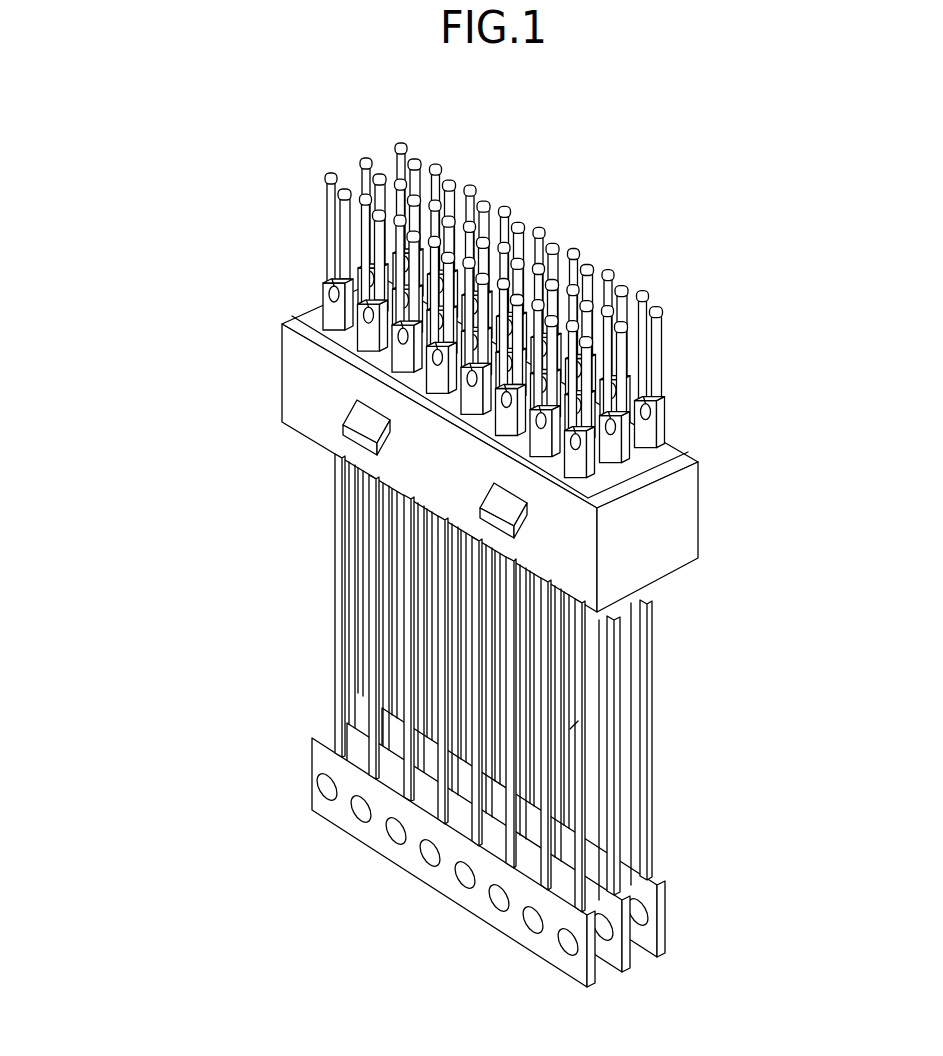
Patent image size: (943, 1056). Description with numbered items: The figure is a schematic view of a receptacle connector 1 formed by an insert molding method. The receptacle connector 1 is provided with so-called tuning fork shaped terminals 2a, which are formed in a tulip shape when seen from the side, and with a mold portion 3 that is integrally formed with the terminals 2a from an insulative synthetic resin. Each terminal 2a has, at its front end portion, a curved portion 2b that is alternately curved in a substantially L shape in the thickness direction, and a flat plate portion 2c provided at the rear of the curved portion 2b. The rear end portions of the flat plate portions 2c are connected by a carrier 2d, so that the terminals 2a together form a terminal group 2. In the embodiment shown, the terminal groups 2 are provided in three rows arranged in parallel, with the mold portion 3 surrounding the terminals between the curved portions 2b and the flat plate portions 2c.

The receptacle connector 1 is at (178, 308).
The terminal group 2 is at (669, 302).
The tuning fork shaped terminal 2a is at (668, 427).
The curved portion 2b is at (327, 230).
The flat plate portion 2c is at (327, 584).
The carrier 2d is at (447, 897).
The mold portion 3 is at (683, 526).